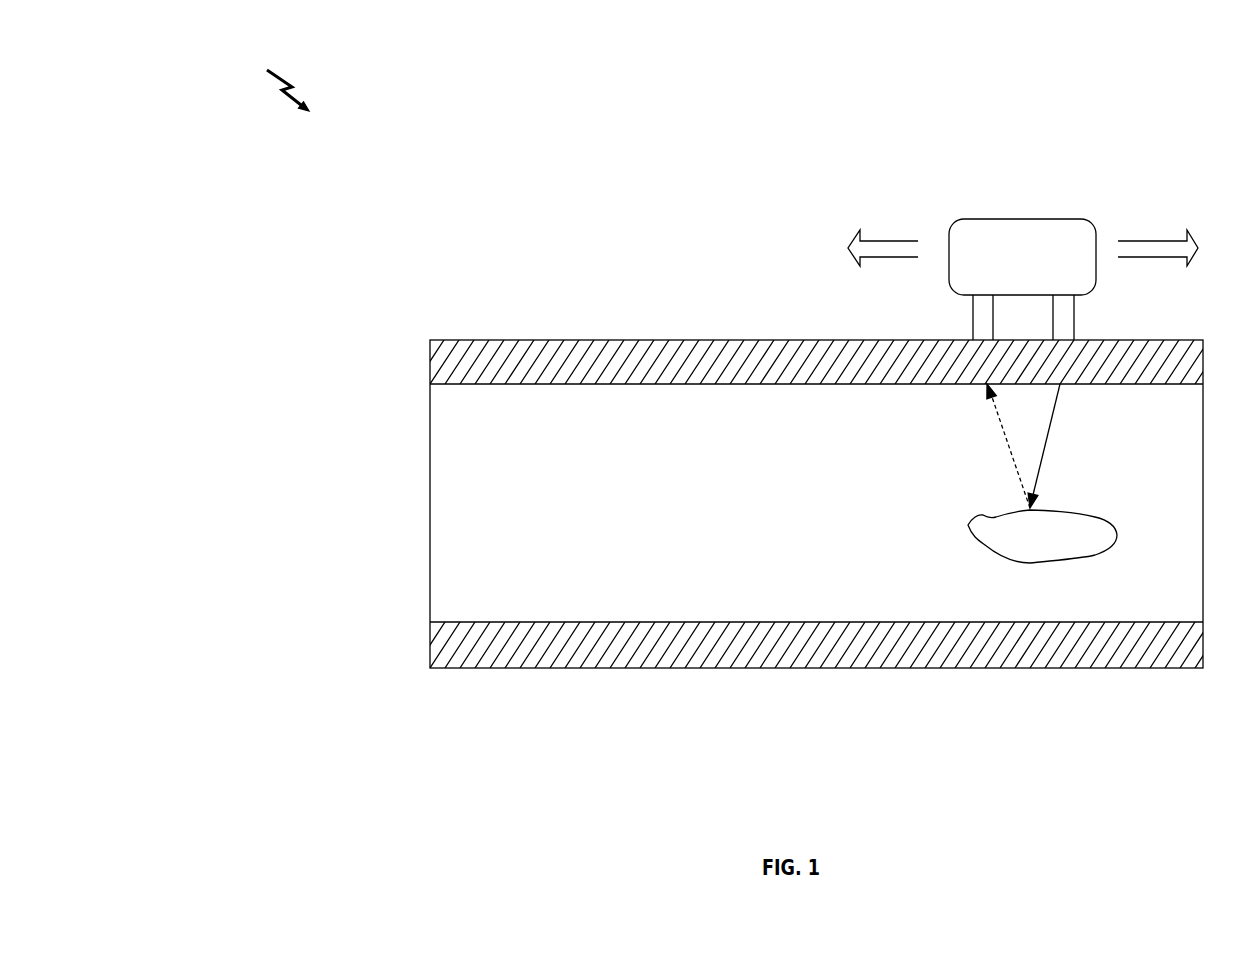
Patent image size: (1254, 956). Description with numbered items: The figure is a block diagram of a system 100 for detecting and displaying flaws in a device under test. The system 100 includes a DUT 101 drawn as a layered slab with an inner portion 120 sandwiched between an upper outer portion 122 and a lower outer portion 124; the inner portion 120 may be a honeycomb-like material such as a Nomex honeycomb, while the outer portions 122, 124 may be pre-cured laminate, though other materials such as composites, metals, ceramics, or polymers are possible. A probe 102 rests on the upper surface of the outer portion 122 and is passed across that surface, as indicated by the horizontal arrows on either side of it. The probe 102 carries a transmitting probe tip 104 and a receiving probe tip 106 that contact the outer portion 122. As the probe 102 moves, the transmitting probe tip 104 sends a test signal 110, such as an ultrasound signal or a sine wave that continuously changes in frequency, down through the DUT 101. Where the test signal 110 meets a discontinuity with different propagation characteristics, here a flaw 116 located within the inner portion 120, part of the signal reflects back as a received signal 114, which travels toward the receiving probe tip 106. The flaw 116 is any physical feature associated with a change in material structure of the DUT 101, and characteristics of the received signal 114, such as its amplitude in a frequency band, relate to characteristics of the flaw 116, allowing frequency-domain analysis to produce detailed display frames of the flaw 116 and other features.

The system 100 is at (277, 78).
The device under test 101 is at (650, 340).
The probe 102 is at (1022, 219).
The transmitting probe tip 104 is at (1073, 323).
The receiving probe tip 106 is at (974, 323).
The test signal 110 is at (1052, 420).
The received signal 114 is at (1017, 472).
The flaw 116 is at (957, 551).
The inner portion 120 is at (465, 467).
The outer portion 122 is at (430, 362).
The outer portion 124 is at (430, 645).